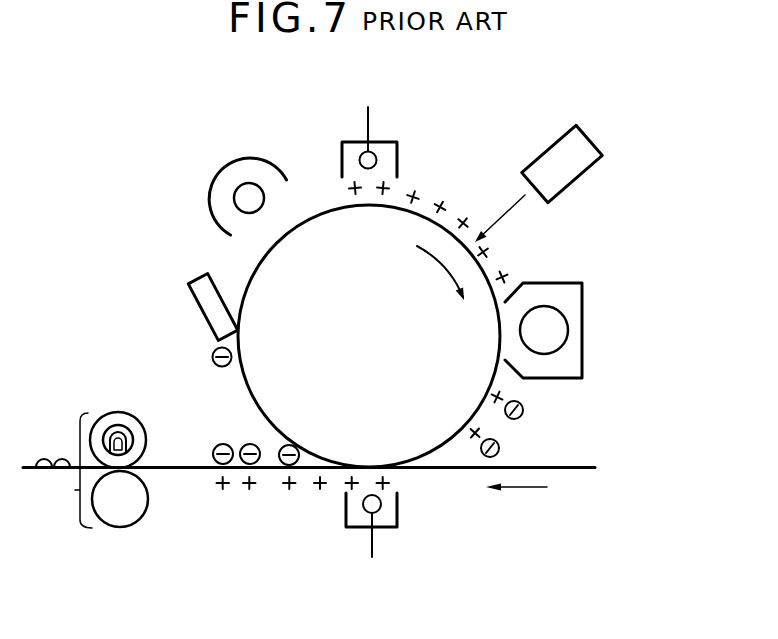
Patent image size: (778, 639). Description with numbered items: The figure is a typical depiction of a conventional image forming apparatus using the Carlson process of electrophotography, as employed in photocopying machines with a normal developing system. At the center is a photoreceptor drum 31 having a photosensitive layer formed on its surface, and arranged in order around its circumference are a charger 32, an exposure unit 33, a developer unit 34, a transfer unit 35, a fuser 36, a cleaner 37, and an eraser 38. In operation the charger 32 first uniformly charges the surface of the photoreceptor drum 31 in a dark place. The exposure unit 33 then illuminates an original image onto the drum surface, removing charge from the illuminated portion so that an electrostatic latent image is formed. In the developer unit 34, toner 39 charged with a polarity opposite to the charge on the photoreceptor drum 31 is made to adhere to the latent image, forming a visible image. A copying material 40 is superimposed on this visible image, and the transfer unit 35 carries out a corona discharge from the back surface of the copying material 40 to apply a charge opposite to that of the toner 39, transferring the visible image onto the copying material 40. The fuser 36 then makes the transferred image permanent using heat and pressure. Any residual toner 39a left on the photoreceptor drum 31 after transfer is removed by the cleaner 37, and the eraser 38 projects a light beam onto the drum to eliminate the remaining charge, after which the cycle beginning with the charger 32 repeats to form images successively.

The photoreceptor drum 31 is at (297, 228).
The charger 32 is at (377, 140).
The exposure unit 33 is at (588, 175).
The developer unit 34 is at (583, 300).
The transfer unit 35 is at (398, 512).
The fuser 36 is at (77, 490).
The cleaner 37 is at (197, 278).
The eraser 38 is at (227, 157).
The toner 39 is at (523, 403).
The residual toner 39a is at (212, 357).
The copying material 40 is at (576, 468).